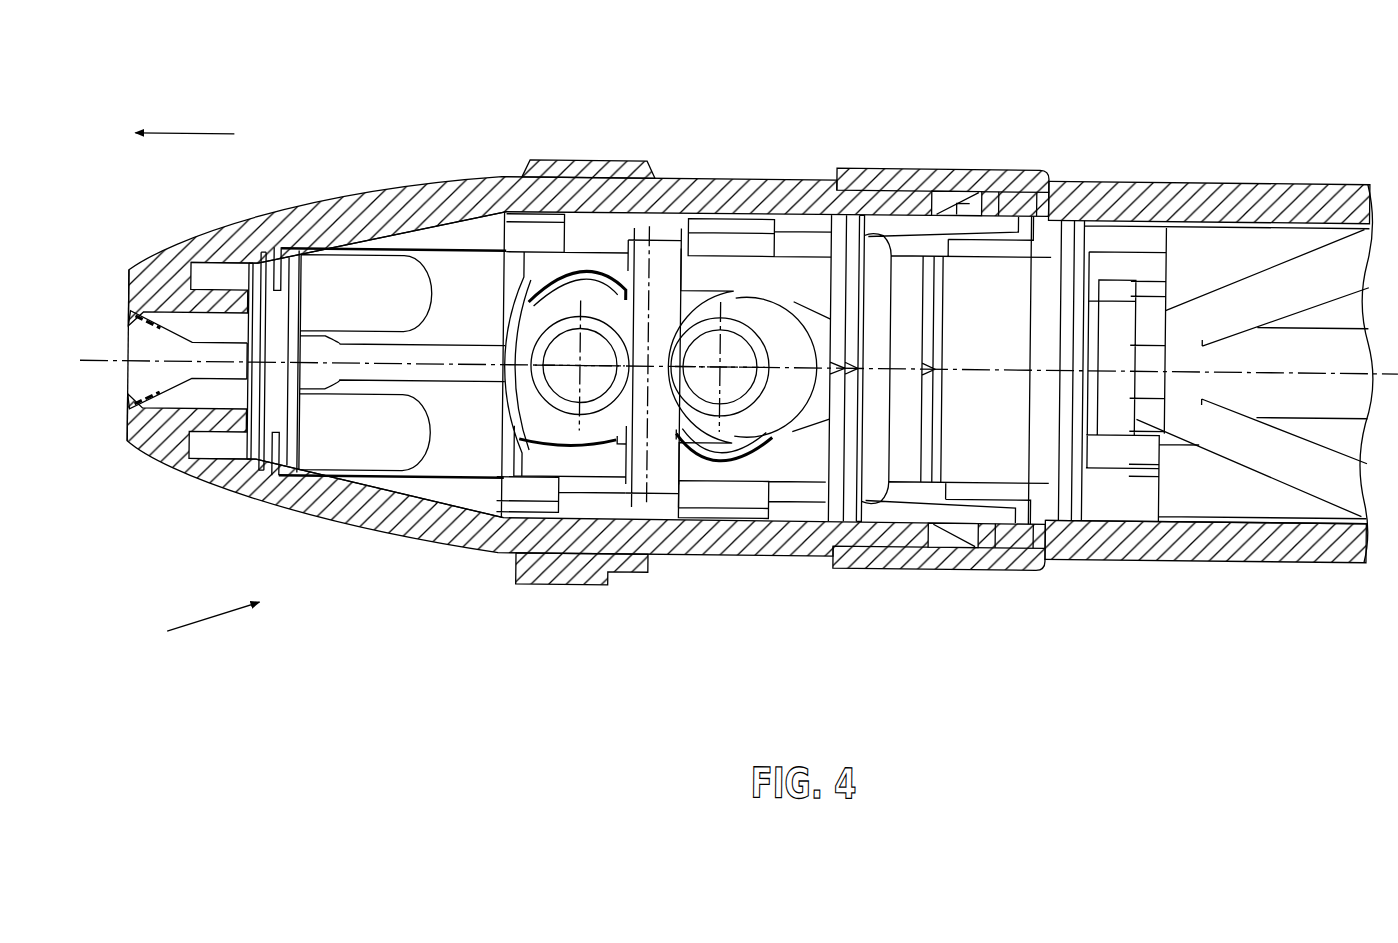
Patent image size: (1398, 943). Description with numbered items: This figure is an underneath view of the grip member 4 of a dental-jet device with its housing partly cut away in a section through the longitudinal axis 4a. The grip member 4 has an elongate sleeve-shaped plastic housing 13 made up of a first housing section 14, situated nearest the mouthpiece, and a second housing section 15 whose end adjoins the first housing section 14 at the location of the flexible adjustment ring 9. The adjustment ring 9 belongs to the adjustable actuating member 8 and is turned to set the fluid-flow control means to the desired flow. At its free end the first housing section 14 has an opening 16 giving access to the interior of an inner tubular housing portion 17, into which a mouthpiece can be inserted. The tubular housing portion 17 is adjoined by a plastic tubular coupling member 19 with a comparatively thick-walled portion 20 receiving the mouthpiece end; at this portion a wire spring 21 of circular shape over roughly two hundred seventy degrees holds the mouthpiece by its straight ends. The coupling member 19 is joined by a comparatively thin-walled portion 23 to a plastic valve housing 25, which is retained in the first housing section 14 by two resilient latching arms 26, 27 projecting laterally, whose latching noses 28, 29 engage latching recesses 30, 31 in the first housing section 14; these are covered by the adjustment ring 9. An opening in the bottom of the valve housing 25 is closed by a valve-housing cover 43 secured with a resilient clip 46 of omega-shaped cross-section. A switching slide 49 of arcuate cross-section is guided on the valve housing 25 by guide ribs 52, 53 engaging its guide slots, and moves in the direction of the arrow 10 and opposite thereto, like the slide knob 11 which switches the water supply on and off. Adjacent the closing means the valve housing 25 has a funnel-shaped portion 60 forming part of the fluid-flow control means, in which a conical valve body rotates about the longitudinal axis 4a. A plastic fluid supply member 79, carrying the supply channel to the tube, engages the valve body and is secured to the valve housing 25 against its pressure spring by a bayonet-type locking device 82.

The grip member 4 is at (201, 624).
The longitudinal axis 4a is at (739, 349).
The actuating member 8 is at (989, 152).
The adjustment ring 9 is at (952, 594).
The arrow 10 is at (185, 106).
The slide knob 11 is at (589, 138).
The housing 13 is at (1288, 200).
The first housing section 14 is at (360, 162).
The second housing section 15 is at (1205, 565).
The opening 16 is at (163, 389).
The inner tubular housing portion 17 is at (207, 389).
The tubular coupling member 19 is at (564, 319).
The thick-walled portion 20 is at (393, 305).
The wire spring 21 is at (259, 319).
The thin-walled portion 23 is at (381, 321).
The valve housing 25 is at (803, 413).
The latching arm 26 is at (1028, 160).
The latching arm 27 is at (1013, 583).
The latching nose 28 is at (962, 160).
The latching nose 29 is at (952, 583).
The latching recess 30 is at (939, 159).
The latching recess 31 is at (918, 449).
The valve-housing cover 43 is at (748, 425).
The clip 46 is at (616, 308).
The switching slide 49 is at (755, 318).
The guide rib 52 is at (830, 315).
The guide rib 53 is at (581, 561).
The funnel-shaped portion 60 is at (948, 429).
The fluid supply member 79 is at (1252, 326).
The bayonet-type locking device 82 is at (1199, 331).